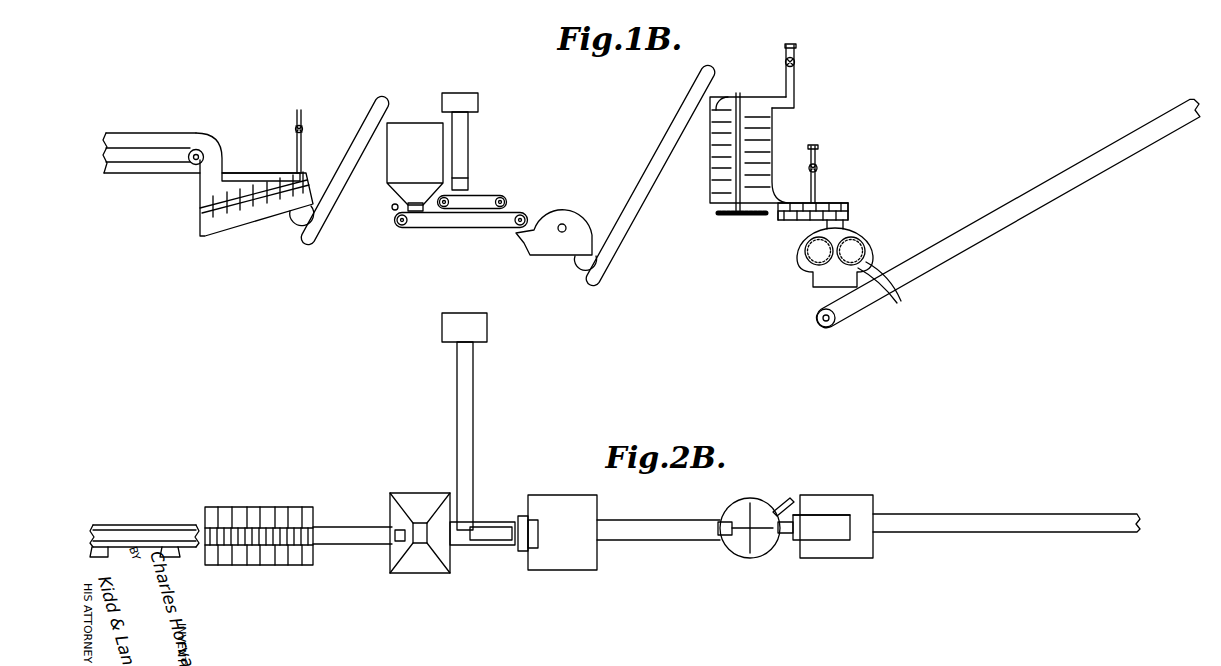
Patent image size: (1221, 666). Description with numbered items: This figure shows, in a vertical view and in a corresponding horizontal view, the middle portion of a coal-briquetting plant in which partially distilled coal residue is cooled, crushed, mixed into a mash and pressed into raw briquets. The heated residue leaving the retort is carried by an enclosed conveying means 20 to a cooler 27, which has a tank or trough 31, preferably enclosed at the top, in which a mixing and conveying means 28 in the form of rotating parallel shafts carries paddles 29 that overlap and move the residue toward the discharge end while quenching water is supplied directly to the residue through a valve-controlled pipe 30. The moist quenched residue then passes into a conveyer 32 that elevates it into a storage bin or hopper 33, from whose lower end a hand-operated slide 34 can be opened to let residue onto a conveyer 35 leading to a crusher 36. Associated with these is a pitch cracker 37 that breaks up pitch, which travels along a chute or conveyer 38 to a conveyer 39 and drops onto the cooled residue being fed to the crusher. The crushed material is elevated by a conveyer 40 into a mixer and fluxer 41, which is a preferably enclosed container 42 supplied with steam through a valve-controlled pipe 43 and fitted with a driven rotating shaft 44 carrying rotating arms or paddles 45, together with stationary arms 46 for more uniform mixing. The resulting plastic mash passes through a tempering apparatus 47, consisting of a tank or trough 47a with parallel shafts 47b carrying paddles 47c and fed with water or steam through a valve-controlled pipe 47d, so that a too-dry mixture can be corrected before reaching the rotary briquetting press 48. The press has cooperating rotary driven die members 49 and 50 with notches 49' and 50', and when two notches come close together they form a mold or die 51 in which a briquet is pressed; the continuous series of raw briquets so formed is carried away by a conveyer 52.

In FIG. 1B, the enclosed conveying means 20 is at (141, 146).
In FIG. 2B, the enclosed conveying means 20 is at (123, 526).
In FIG. 1B, the cooler 27 is at (243, 172).
In FIG. 2B, the cooler 27 is at (216, 507).
In FIG. 1B, the mixing and conveying means 28 is at (259, 216).
In FIG. 2B, the mixing and conveying means 28 is at (295, 518).
In FIG. 1B, the paddles 29 is at (238, 228).
In FIG. 2B, the paddles 29 is at (264, 550).
In FIG. 1B, the valve-controlled pipe 30 is at (303, 142).
In FIG. 1B, the tank or trough 31 is at (212, 243).
In FIG. 1B, the conveyer 32 is at (337, 201).
In FIG. 2B, the conveyer 32 is at (353, 548).
In FIG. 1B, the storage bin or hopper 33 is at (437, 149).
In FIG. 2B, the storage bin or hopper 33 is at (425, 567).
In FIG. 1B, the hand-operated slide 34 is at (393, 211).
In FIG. 1B, the conveyer 35 is at (455, 229).
In FIG. 2B, the conveyer 35 is at (490, 546).
In FIG. 1B, the crusher 36 is at (552, 258).
In FIG. 2B, the crusher 36 is at (580, 571).
In FIG. 1B, the pitch cracker 37 is at (478, 101).
In FIG. 2B, the pitch cracker 37 is at (487, 330).
In FIG. 1B, the chute or conveyer 38 is at (468, 163).
In FIG. 2B, the chute or conveyer 38 is at (467, 412).
In FIG. 1B, the conveyer 39 is at (495, 194).
In FIG. 2B, the conveyer 39 is at (490, 530).
In FIG. 1B, the conveyer 40 is at (643, 198).
In FIG. 2B, the conveyer 40 is at (655, 535).
In FIG. 1B, the mixer and fluxer 41 is at (775, 140).
In FIG. 2B, the mixer and fluxer 41 is at (741, 556).
In FIG. 1B, the container 42 is at (775, 122).
In FIG. 2B, the container 42 is at (733, 512).
In FIG. 1B, the valve-controlled pipe 43 is at (797, 72).
In FIG. 2B, the valve-controlled pipe 43 is at (777, 504).
In FIG. 1B, the driven rotating shaft 44 is at (752, 178).
In FIG. 2B, the driven rotating shaft 44 is at (755, 532).
In FIG. 1B, the rotating arms or paddles 45 is at (725, 215).
In FIG. 2B, the rotating arms or paddles 45 is at (753, 545).
In FIG. 1B, the stationary arms 46 is at (712, 127).
In FIG. 1B, the tempering apparatus 47 is at (845, 202).
In FIG. 2B, the tempering apparatus 47 is at (816, 513).
In FIG. 1B, the tank or trough 47a is at (787, 218).
In FIG. 2B, the tank or trough 47a is at (832, 541).
In FIG. 1B, the parallel shafts 47b is at (870, 200).
In FIG. 1B, the paddles 47c is at (800, 216).
In FIG. 1B, the valve-controlled pipe 47d is at (825, 185).
In FIG. 1B, the rotary briquetting press 48 is at (862, 235).
In FIG. 2B, the rotary briquetting press 48 is at (866, 560).
In FIG. 1B, the rotary driven die member 49 is at (800, 287).
In FIG. 1B, the notches 49' is at (759, 301).
In FIG. 1B, the rotary driven die member 50 is at (882, 243).
In FIG. 1B, the notches 50' is at (896, 293).
In FIG. 1B, the mold or die 51 is at (838, 262).
In FIG. 1B, the conveyer 52 is at (1047, 202).
In FIG. 2B, the conveyer 52 is at (1017, 514).